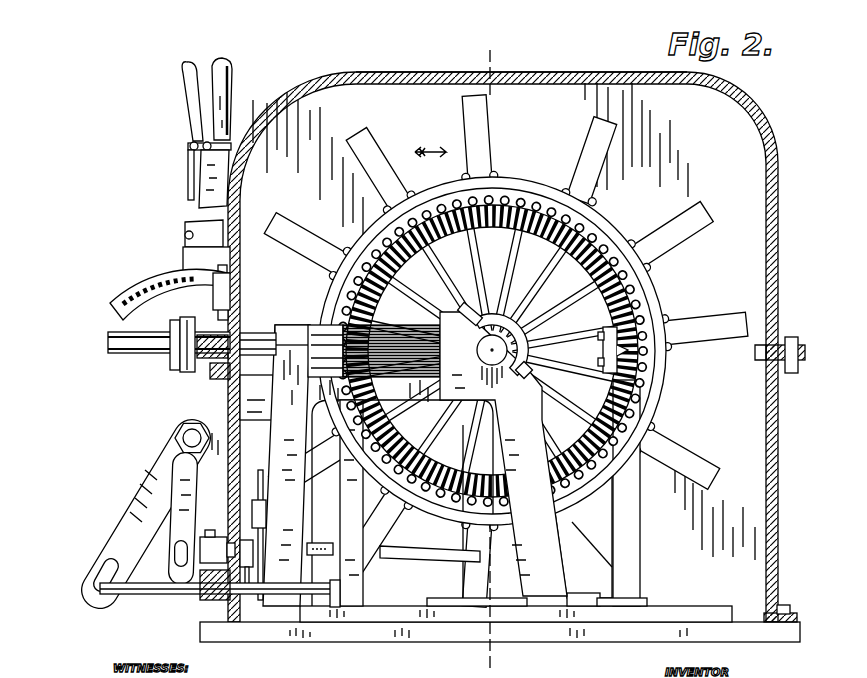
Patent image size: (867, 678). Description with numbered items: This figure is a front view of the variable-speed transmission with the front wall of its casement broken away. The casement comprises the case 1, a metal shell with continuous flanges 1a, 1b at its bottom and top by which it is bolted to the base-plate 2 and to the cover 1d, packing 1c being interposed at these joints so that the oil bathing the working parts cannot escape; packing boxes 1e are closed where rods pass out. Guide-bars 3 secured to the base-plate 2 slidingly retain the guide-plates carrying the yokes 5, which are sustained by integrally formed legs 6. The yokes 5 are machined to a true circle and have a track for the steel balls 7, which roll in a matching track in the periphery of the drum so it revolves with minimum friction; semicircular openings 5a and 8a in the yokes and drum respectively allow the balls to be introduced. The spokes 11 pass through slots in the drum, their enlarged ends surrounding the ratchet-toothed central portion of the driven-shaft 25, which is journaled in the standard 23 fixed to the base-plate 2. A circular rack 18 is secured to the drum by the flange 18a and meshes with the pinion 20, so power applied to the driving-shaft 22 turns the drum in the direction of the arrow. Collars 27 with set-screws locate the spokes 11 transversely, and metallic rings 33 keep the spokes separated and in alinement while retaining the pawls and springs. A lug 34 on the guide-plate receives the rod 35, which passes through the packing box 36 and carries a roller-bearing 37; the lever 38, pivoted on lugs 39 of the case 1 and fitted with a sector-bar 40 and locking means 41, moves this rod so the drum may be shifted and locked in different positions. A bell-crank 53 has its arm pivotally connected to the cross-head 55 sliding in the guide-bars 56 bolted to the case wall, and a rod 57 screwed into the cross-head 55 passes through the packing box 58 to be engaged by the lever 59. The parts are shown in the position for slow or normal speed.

The case 1 is at (773, 473).
The bottom flange 1a is at (796, 616).
The top flange 1b is at (805, 363).
The packing 1c is at (765, 352).
The cover 1d is at (776, 215).
The packing boxes 1e is at (167, 367).
The base-plate 2 is at (472, 635).
The guide-bars 3 is at (663, 612).
The yokes 5 is at (528, 190).
The semicircular opening 5a is at (504, 350).
The legs 6 is at (650, 537).
The steel balls 7 is at (595, 232).
The semicircular opening 8a is at (467, 227).
The spokes 11 is at (283, 232).
The circular rack 18 is at (630, 297).
The flange 18a is at (608, 375).
The pinion 20 is at (335, 320).
The driving-shaft 22 is at (117, 360).
The standard 23 is at (503, 454).
The driven-shaft 25 is at (480, 348).
The collars 27 is at (535, 292).
The metallic rings 33 is at (527, 337).
The lug 34 is at (335, 590).
The rod 35 is at (187, 596).
The packing box 36 is at (200, 613).
The roller-bearing 37 is at (97, 590).
The lever 38 is at (233, 82).
The lugs 39 is at (173, 438).
The sector-bar 40 is at (143, 283).
The locking means 41 is at (180, 242).
The bell-crank 53 is at (442, 553).
The cross-head 55 is at (253, 565).
The guide-bars 56 is at (260, 500).
The rod 57 is at (187, 520).
The packing box 58 is at (207, 537).
The lever 59 is at (173, 528).